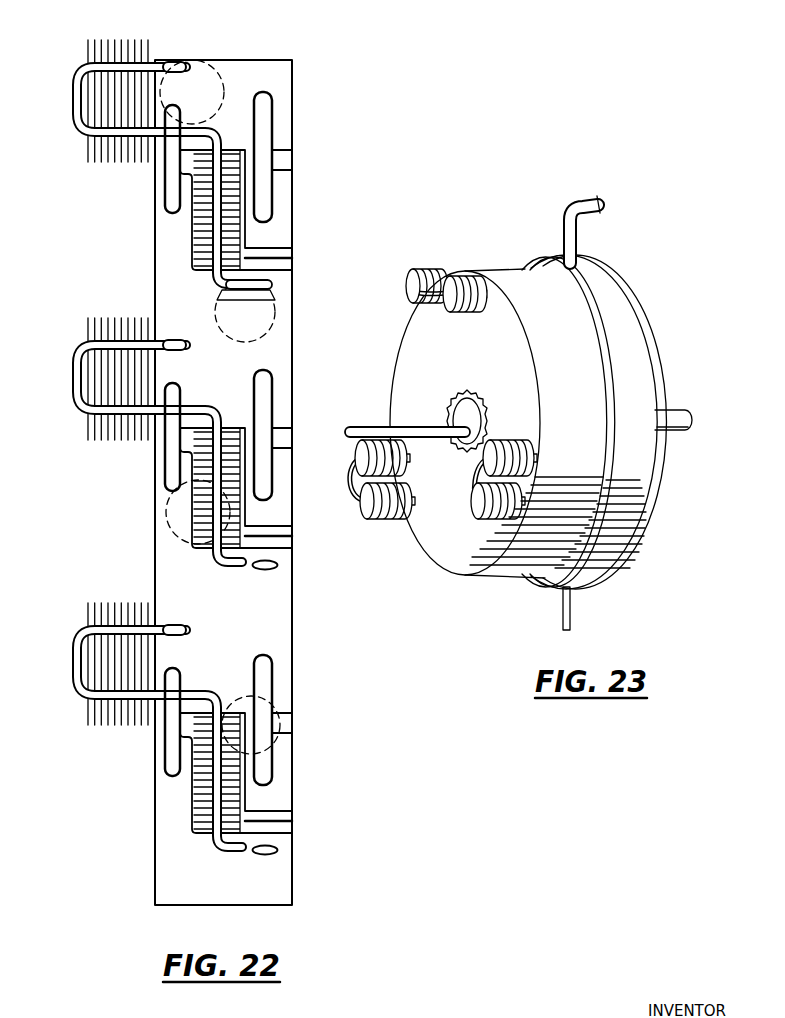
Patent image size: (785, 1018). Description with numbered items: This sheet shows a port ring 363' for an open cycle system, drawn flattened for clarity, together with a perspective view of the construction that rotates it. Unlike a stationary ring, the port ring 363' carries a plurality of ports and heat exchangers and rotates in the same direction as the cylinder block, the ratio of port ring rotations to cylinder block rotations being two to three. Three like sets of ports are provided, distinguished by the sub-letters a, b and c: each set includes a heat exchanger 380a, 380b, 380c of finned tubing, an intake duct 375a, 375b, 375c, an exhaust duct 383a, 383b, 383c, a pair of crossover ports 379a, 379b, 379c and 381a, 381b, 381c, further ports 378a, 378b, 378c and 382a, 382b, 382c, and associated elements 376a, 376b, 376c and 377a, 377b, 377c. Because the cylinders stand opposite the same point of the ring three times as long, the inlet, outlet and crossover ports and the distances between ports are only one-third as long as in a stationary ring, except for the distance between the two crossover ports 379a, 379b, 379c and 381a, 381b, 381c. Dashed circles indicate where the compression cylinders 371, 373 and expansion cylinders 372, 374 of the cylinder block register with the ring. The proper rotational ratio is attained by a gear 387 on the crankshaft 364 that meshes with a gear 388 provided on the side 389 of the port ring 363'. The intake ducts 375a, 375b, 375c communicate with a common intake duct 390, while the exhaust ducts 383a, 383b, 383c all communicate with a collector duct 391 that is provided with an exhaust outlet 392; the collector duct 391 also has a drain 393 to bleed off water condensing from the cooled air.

In FIG. 22, the port ring 363' is at (262, 471).
In FIG. 23, the port ring 363' is at (511, 256).
In FIG. 23, the crankshaft 364 is at (373, 408).
In FIG. 22, the compression cylinder 371 is at (224, 88).
In FIG. 22, the expansion cylinder 372 is at (285, 312).
In FIG. 22, the compression cylinder 373 is at (162, 512).
In FIG. 22, the expansion cylinder 374 is at (246, 702).
In FIG. 22, the intake duct 375a is at (282, 260).
In FIG. 22, the intake duct 375b is at (308, 539).
In FIG. 22, the intake duct 375c is at (313, 826).
In FIG. 22, the port ring element of set a 376a is at (195, 230).
In FIG. 22, the port ring element of set b 376b is at (272, 488).
In FIG. 22, the port ring element of set c 376c is at (275, 773).
In FIG. 22, the port ring element of set a 377a is at (190, 160).
In FIG. 22, the port ring element of set b 377b is at (236, 460).
In FIG. 22, the port ring element of set c 377c is at (236, 773).
In FIG. 22, the port of set a 378a is at (168, 200).
In FIG. 22, the port of set b 378b is at (138, 437).
In FIG. 22, the port of set c 378c is at (137, 722).
In FIG. 22, the crossover port 379a is at (170, 62).
In FIG. 22, the crossover port 379b is at (189, 330).
In FIG. 22, the crossover port 379c is at (203, 616).
In FIG. 22, the heat exchanger 380a is at (98, 112).
In FIG. 22, the heat exchanger 380b is at (132, 440).
In FIG. 22, the heat exchanger 380c is at (135, 725).
In FIG. 22, the crossover port 381a is at (256, 285).
In FIG. 22, the crossover port 381b is at (308, 573).
In FIG. 22, the crossover port 381c is at (309, 858).
In FIG. 22, the port of set a 382a is at (305, 426).
In FIG. 22, the port of set b 382b is at (311, 720).
In FIG. 22, the port of set c 382c is at (268, 130).
In FIG. 22, the exhaust duct 383a is at (311, 427).
In FIG. 22, the exhaust duct 383b is at (326, 725).
In FIG. 22, the exhaust duct 383c is at (283, 163).
In FIG. 23, the gear 387 is at (466, 450).
In FIG. 23, the gear 388 is at (483, 403).
In FIG. 23, the side of port ring 389 is at (404, 330).
In FIG. 23, the common intake duct 390 is at (693, 410).
In FIG. 23, the collector duct 391 is at (607, 298).
In FIG. 23, the exhaust outlet 392 is at (600, 204).
In FIG. 23, the drain 393 is at (573, 601).